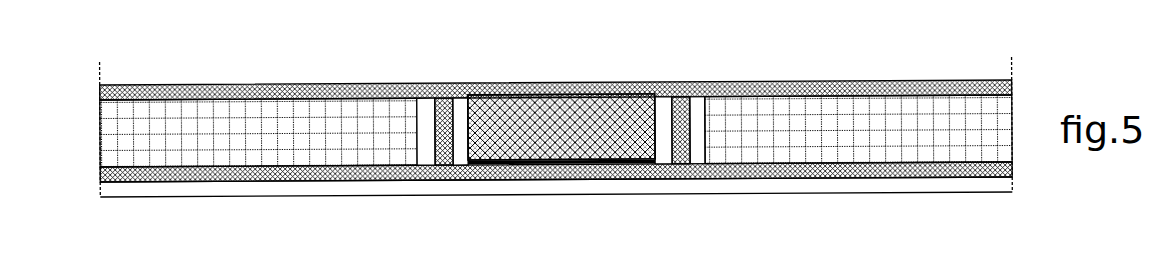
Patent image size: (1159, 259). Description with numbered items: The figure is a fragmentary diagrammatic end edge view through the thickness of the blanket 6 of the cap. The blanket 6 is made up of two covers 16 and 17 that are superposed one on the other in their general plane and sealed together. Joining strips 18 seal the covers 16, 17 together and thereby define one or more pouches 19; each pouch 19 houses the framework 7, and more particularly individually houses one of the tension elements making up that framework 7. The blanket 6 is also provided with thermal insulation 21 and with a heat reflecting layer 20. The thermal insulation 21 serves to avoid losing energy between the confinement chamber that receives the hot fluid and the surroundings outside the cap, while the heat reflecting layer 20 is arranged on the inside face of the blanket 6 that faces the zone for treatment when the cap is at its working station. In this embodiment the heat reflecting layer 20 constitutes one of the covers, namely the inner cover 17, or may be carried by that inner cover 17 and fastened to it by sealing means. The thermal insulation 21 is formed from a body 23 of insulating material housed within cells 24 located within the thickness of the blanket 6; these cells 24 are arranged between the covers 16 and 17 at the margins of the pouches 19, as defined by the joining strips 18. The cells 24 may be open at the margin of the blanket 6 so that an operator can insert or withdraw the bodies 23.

The blanket 6 is at (993, 55).
The framework 7 is at (462, 150).
The cover 16 is at (241, 85).
The inner cover 17 is at (162, 183).
The joining strips 18 is at (437, 150).
The pouch 19 is at (460, 105).
The heat reflecting layer 20 is at (262, 197).
The thermal insulation 21 is at (782, 112).
The body of insulating material 23 is at (188, 112).
The cells 24 is at (427, 112).